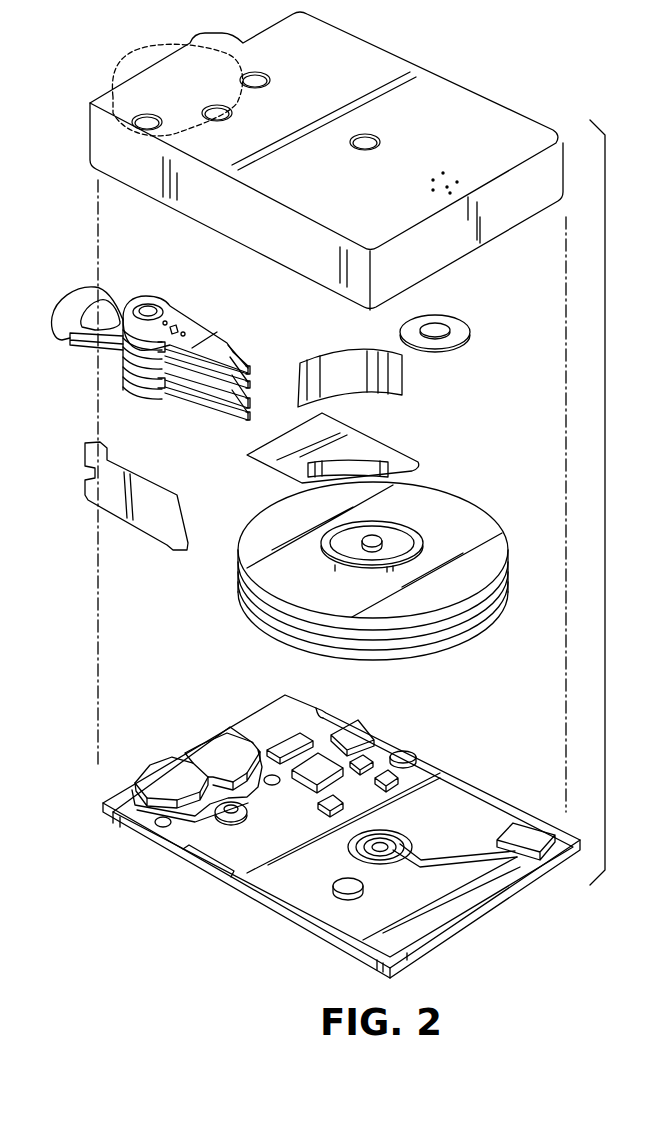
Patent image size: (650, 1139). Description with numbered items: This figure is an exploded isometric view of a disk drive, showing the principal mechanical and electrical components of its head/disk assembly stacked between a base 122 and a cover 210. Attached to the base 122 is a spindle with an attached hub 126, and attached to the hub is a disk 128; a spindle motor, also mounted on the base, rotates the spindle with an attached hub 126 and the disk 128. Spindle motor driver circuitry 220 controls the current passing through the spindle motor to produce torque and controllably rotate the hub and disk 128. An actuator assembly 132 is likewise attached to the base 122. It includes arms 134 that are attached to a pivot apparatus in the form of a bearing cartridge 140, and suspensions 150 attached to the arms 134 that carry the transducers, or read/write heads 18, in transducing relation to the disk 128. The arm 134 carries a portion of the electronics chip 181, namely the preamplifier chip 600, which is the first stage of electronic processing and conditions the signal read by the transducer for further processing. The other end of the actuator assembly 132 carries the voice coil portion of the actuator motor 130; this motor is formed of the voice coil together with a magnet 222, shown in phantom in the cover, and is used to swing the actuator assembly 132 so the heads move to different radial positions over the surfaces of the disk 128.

The read/write head 18 is at (250, 368).
The base 122 is at (443, 793).
The spindle with an attached hub 126 is at (378, 538).
The disk 128 is at (478, 520).
The actuator motor 130 is at (83, 298).
The actuator assembly 132 is at (123, 383).
The arm 134 is at (197, 338).
The bearing cartridge 140 is at (148, 310).
The suspension 150 is at (230, 357).
The electronics chip 181 is at (390, 723).
The cover 210 is at (467, 107).
The spindle motor driver circuitry 220 is at (160, 757).
The magnet 222 is at (178, 60).
The preamplifier chip 600 is at (175, 325).